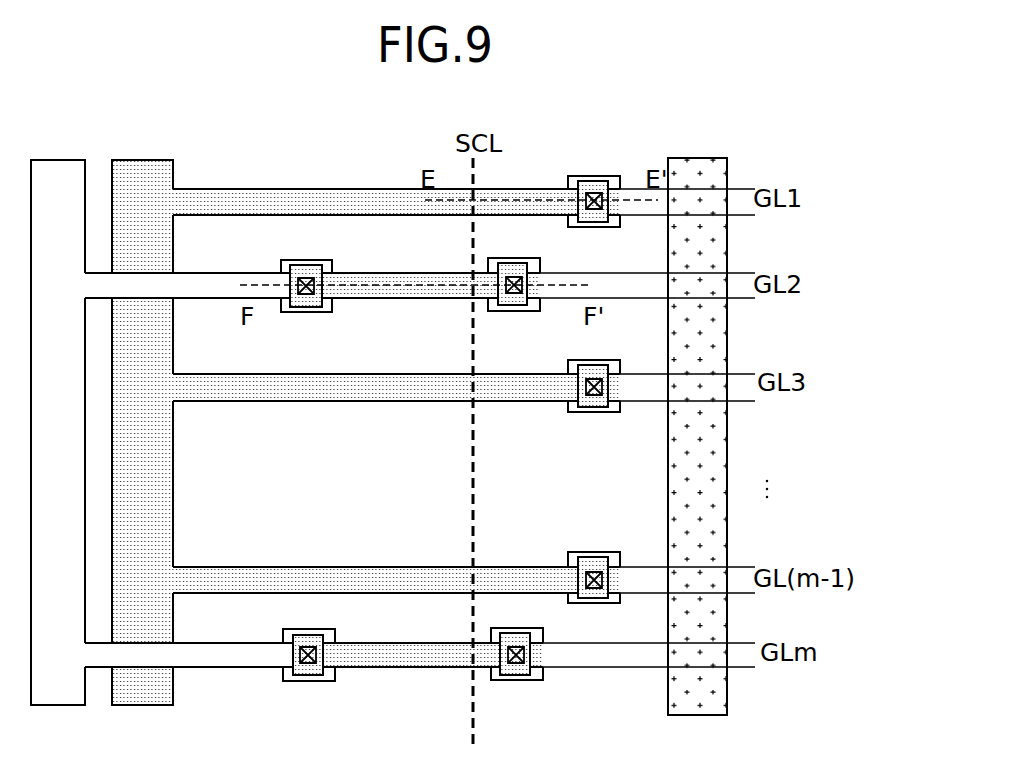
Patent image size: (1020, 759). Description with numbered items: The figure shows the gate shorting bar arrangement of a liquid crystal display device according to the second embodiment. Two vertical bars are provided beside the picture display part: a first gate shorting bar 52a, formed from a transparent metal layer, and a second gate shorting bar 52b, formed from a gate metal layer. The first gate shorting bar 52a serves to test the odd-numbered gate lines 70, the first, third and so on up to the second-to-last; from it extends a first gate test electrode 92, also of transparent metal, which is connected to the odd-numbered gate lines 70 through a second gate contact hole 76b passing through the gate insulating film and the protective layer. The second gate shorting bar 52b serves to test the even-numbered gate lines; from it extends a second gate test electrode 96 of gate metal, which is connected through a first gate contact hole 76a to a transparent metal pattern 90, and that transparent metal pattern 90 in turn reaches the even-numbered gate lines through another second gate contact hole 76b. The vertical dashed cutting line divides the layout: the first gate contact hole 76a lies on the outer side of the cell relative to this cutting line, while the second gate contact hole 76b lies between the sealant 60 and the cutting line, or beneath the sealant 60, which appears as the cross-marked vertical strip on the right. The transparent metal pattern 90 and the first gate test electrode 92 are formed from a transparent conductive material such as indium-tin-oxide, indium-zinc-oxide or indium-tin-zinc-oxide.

The second gate shorting bar 52b is at (60, 158).
The first gate shorting bar 52a is at (144, 158).
The first gate test electrode 92 is at (298, 189).
The second gate test electrode 96 is at (205, 273).
The first gate contact hole 76a is at (305, 298).
The second gate contact hole 76b is at (595, 193).
The transparent metal pattern 90 is at (386, 299).
The odd-numbered gate lines 70 is at (652, 299).
The sealant 60 is at (699, 158).